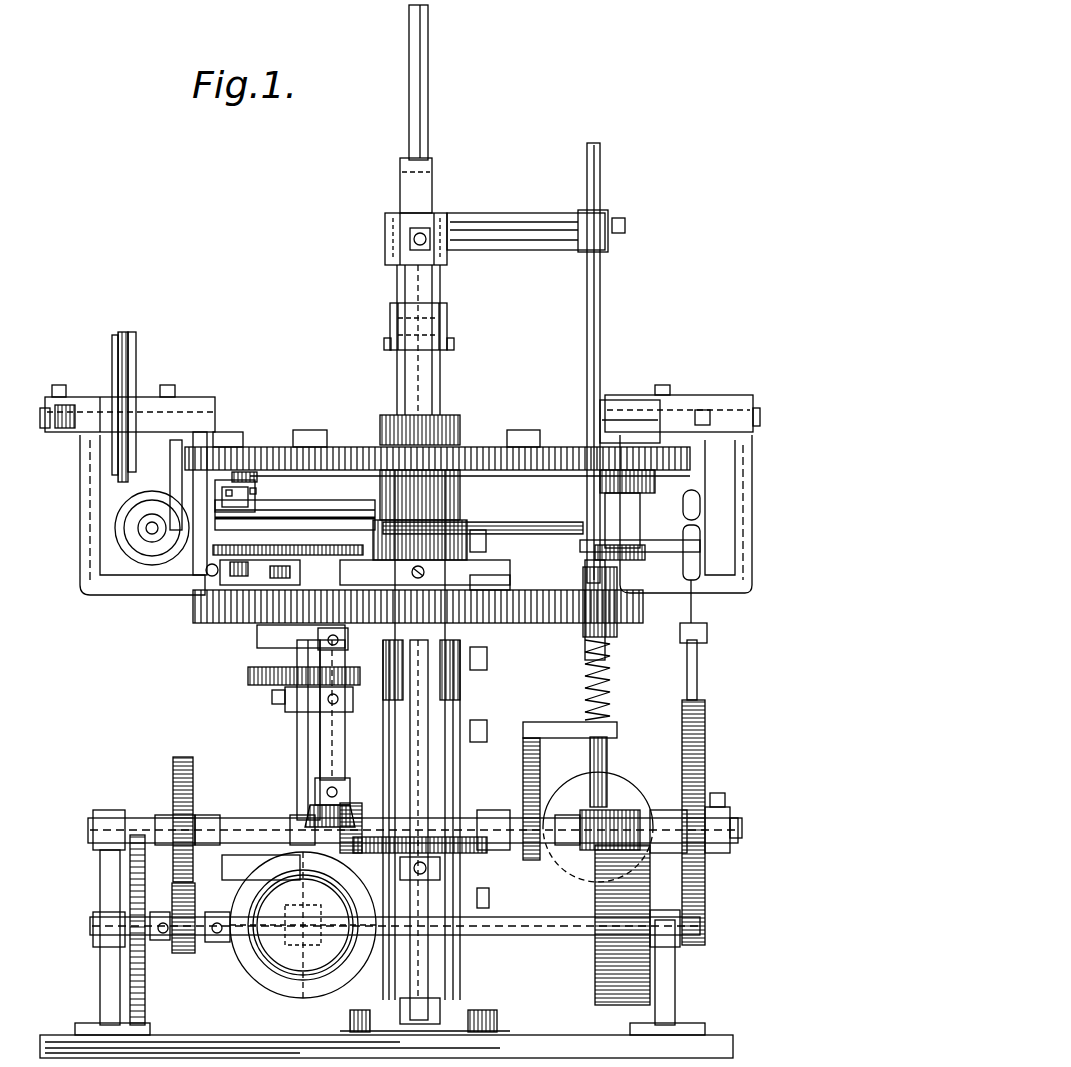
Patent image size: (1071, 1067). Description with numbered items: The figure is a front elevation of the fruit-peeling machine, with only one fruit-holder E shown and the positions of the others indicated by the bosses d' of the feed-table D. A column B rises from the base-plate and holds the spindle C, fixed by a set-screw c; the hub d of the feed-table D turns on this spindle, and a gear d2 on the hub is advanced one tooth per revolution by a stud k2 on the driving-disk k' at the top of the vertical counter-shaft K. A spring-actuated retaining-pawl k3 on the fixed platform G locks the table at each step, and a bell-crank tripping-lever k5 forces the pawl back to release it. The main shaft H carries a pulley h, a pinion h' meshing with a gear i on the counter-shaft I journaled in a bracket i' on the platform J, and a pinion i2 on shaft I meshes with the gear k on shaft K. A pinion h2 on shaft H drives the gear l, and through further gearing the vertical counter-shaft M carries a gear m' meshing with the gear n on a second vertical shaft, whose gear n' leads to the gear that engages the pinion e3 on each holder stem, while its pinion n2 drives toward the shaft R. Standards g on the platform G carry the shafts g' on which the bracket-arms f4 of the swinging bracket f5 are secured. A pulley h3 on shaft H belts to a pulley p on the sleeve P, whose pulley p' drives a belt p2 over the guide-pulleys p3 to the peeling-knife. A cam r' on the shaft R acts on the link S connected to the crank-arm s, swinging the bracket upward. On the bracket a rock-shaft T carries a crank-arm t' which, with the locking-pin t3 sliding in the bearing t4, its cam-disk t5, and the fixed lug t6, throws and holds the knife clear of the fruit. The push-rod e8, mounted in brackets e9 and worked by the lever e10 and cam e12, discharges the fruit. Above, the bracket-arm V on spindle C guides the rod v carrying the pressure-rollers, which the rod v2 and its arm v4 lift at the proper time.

The rod v is at (428, 116).
The arm v4 is at (527, 228).
The bracket-arm V is at (385, 224).
The vertically-movable rod v2 is at (603, 334).
The sleeve P is at (110, 396).
The belt p2 is at (124, 334).
The pulley p' is at (152, 392).
The pulley p is at (143, 405).
The guide-pulleys p3 is at (133, 548).
The shafts g' is at (407, 424).
The standards g is at (419, 513).
The bracket-arms f4 is at (668, 470).
The swinging bracket f5 is at (530, 515).
The feed-table D is at (478, 447).
The bosses d' is at (389, 424).
The hub d is at (439, 495).
The gear d2 is at (500, 570).
The spindle C is at (426, 412).
The fixed lug t6 is at (232, 428).
The crank-arm t' is at (224, 491).
The locking-pin t3 is at (255, 472).
The bearing t4 is at (259, 494).
The cam-disk t5 is at (235, 494).
The rock-shaft T is at (270, 510).
The pin or stud k2 is at (358, 545).
The driving-disk k' is at (515, 569).
The retaining-pawl k3 is at (207, 575).
The bell-crank tripping-lever k5 is at (268, 590).
The fixed platform G is at (232, 600).
The gear n' is at (308, 641).
The gear m' is at (292, 689).
The vertical counter-shaft M is at (297, 742).
The gear n is at (343, 722).
The pinion n2 is at (315, 812).
The pinion i2 is at (352, 815).
The counter-shaft I is at (243, 828).
The bracket i' is at (218, 809).
The gear i is at (195, 817).
The pinion h' is at (182, 935).
The pinion h2 is at (230, 945).
The pulley h3 is at (130, 878).
The main shaft H is at (90, 932).
The gear l is at (256, 975).
The platform J is at (222, 872).
The vertical counter-shaft K is at (418, 777).
The column B is at (455, 790).
The shaft R is at (466, 825).
The set-screw c is at (480, 735).
The gear k is at (440, 872).
The brackets e9 is at (590, 618).
The push-rod e8 is at (612, 700).
The lever e10 is at (607, 776).
The cam e12 is at (612, 812).
The pulley h is at (608, 925).
The cam r' is at (704, 822).
The link S is at (697, 676).
The crank-arm s is at (712, 481).
The fruit-holder E is at (630, 406).
The pinion e3 is at (657, 489).